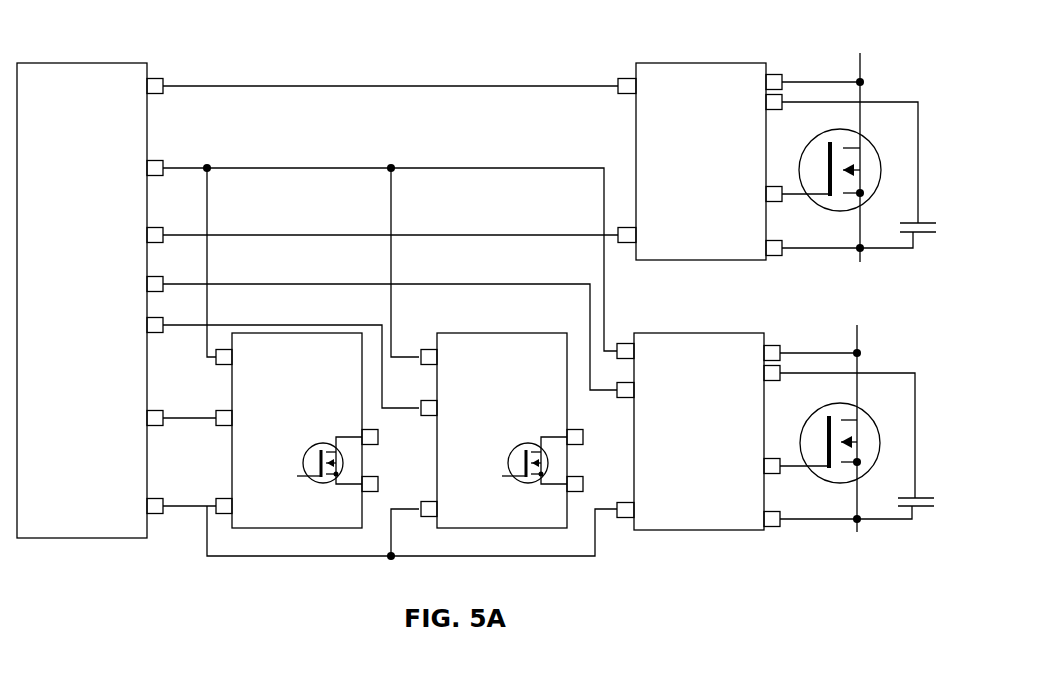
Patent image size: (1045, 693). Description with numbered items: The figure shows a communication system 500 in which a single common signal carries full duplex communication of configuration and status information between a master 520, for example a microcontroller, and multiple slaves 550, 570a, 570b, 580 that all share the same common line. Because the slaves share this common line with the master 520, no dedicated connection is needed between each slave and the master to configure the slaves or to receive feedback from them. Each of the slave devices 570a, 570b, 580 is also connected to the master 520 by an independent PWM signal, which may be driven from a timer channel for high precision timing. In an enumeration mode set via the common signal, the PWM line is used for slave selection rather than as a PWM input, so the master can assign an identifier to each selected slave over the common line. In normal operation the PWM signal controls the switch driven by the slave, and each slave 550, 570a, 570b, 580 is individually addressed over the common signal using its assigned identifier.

The communication system 500 is at (414, 66).
The master 520 is at (116, 300).
The slave 550 is at (777, 157).
The slave 570a is at (297, 430).
The slave 570b is at (502, 430).
The slave 580 is at (775, 428).